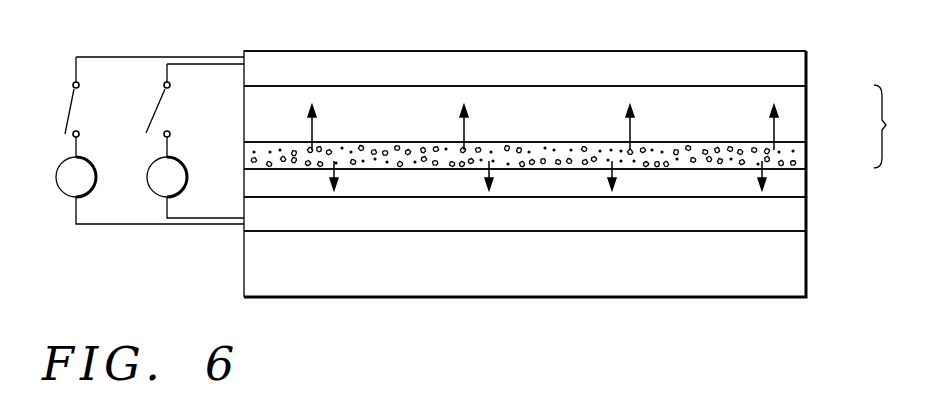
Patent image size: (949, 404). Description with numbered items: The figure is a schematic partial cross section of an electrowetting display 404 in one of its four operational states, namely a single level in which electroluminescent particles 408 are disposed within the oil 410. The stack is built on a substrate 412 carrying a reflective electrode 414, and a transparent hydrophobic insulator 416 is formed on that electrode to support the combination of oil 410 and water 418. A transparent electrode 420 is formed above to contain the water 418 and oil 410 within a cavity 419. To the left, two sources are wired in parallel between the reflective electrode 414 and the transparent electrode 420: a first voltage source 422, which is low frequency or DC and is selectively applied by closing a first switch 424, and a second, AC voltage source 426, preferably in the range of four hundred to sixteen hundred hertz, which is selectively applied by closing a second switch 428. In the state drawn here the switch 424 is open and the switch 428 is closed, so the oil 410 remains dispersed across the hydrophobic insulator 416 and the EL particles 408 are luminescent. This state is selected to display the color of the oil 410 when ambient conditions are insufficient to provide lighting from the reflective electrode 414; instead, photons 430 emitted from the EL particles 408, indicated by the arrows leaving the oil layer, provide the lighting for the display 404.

The electrowetting display 404 is at (185, 297).
The electroluminescent particles 408 is at (705, 149).
The oil 410 is at (795, 157).
The substrate 412 is at (772, 287).
The reflective electrode 414 is at (793, 217).
The transparent hydrophobic insulator 416 is at (795, 186).
The water 418 is at (795, 122).
The cavity 419 is at (904, 126).
The transparent electrode 420 is at (773, 60).
The first voltage source 422 is at (147, 180).
The first switch 424 is at (170, 115).
The second voltage source 426 is at (60, 190).
The second switch 428 is at (107, 102).
The photons 430 is at (467, 116).